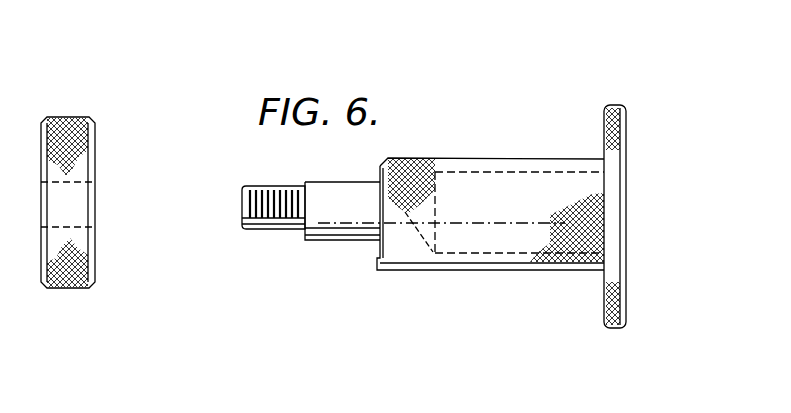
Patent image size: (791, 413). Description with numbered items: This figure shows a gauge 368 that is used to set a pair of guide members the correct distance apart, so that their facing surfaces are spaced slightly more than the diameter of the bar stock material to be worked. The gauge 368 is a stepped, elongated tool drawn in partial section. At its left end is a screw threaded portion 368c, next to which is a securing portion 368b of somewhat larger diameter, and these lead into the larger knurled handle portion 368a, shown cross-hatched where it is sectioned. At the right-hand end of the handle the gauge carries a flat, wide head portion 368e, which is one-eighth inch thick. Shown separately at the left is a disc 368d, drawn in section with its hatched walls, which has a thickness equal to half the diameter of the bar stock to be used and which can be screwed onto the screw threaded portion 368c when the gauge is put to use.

The gauge 368 is at (416, 241).
The knurled handle portion 368a is at (495, 263).
The securing portion 368b is at (342, 224).
The screw threaded portion 368c is at (264, 213).
The disc 368d is at (78, 245).
The head portion 368e is at (620, 307).